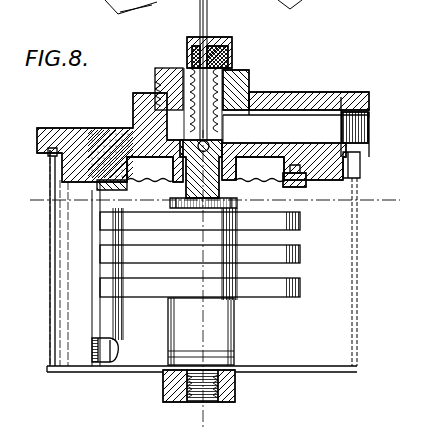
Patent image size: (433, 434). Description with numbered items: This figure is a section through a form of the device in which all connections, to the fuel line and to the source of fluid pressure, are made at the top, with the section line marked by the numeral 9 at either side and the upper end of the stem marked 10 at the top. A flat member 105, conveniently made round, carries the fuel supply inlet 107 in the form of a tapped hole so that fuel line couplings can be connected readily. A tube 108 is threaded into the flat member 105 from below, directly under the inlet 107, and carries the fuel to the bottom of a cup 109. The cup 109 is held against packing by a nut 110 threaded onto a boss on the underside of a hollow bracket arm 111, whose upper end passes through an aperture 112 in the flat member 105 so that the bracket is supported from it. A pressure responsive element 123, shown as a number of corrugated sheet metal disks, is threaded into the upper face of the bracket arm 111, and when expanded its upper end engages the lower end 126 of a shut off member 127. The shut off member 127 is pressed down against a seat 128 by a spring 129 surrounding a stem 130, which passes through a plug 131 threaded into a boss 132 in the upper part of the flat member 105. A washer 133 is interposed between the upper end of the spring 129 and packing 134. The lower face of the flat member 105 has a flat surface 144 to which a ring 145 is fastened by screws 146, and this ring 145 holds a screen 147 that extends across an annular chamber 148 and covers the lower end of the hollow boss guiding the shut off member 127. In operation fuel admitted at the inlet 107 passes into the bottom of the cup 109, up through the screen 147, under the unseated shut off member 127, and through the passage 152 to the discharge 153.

The section line 9- 9 is at (202, 205).
The valve stem 10 is at (208, 10).
The flat member 105 is at (60, 128).
The fuel supply inlet 107 is at (121, 120).
The tube 108 is at (92, 318).
The cup 109 is at (352, 345).
The nut 110 is at (198, 416).
The hollow bracket arm 111 is at (201, 331).
The aperture 112 is at (240, 394).
The pressure responsive element 123 is at (200, 274).
The lower end of shut off member 126 is at (186, 193).
The shut off member 127 is at (250, 126).
The seat 128 is at (249, 139).
The spring 129 is at (249, 71).
The stem 130 is at (208, 23).
The plug 131 is at (252, 80).
The boss 132 is at (155, 80).
The washer 133 is at (187, 62).
The packing 134 is at (187, 56).
The flat surface 144 is at (356, 185).
The ring 145 is at (304, 187).
The screws 146 is at (296, 188).
The screen 147 is at (260, 169).
The annular chamber 148 is at (150, 169).
The passage 152 is at (296, 126).
The discharge 153 is at (362, 131).